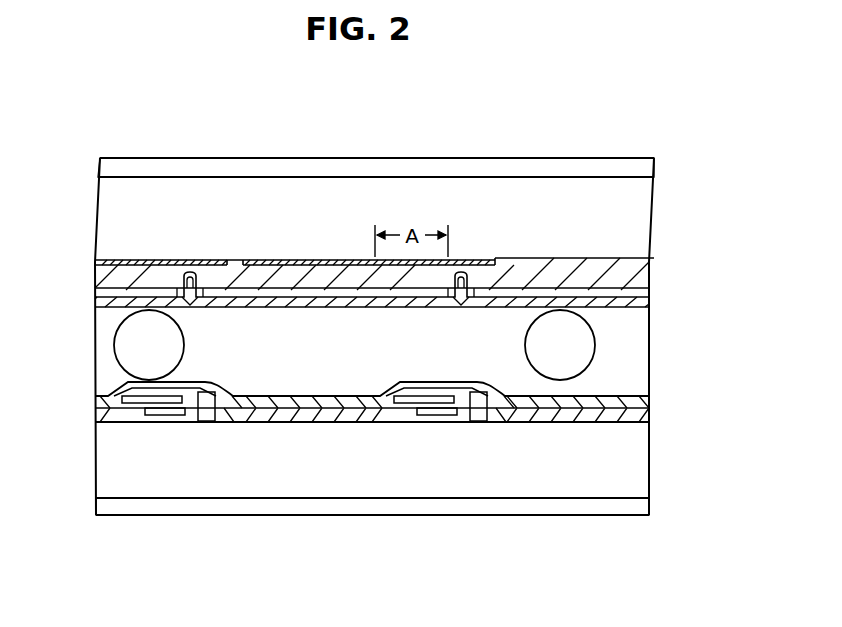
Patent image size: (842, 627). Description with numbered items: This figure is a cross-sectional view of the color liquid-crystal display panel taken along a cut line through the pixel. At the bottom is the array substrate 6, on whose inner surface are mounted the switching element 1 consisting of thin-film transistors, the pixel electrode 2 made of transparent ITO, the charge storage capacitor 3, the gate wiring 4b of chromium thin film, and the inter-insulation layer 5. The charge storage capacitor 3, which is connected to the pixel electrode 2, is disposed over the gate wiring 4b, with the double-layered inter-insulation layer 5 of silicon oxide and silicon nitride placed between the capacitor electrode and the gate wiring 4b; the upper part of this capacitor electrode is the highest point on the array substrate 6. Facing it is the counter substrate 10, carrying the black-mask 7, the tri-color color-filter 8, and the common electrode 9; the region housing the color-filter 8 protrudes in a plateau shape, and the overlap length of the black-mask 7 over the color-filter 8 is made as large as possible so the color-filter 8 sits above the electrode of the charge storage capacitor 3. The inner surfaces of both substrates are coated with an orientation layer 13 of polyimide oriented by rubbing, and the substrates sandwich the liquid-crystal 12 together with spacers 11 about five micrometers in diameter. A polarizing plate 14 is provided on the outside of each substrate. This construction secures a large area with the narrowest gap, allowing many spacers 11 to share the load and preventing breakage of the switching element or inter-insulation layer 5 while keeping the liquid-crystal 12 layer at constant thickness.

The switching element 1 is at (197, 422).
The pixel electrode 2 is at (233, 422).
The charge storage capacitor 3 is at (148, 385).
The gate wiring 4b is at (155, 425).
The inter-insulation layer 5 is at (160, 400).
The array substrate 6 is at (185, 475).
The black-mask 7 is at (105, 260).
The color-filter 8 is at (103, 281).
The common electrode 9 is at (627, 285).
The counter substrate 10 is at (125, 200).
The spacers 11 is at (583, 350).
The liquid-crystal 12 is at (632, 370).
The orientation layer 13 is at (150, 382).
The polarizing plate 14 is at (638, 163).